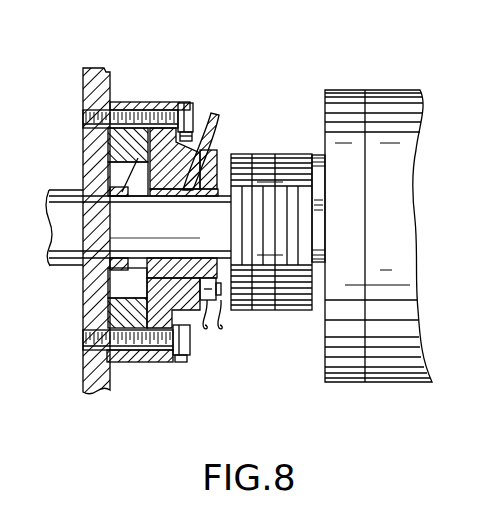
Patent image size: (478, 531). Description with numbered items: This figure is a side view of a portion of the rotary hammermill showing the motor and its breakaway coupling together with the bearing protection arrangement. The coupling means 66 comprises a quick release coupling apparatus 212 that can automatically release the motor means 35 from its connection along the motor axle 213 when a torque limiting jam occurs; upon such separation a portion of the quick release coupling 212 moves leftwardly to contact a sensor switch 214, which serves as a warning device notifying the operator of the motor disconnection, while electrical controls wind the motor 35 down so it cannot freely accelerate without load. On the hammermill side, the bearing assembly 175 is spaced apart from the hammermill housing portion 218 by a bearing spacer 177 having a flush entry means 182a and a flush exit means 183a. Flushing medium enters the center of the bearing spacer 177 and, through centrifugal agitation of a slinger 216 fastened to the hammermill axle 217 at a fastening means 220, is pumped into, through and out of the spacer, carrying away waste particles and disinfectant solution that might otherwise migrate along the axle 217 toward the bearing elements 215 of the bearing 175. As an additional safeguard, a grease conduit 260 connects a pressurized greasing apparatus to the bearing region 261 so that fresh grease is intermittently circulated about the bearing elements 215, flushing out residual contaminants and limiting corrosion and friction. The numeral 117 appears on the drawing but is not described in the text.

The motor means 35 is at (405, 90).
The coupling means 66 is at (320, 223).
The frame member 117 is at (467, 334).
The bearing assembly 175 is at (170, 102).
The bearing spacer 177 is at (122, 102).
The flush entry means 182a is at (110, 145).
The flush exit means 183a is at (150, 363).
The quick release coupling apparatus 212 is at (272, 160).
The motor axle 213 is at (317, 263).
The sensor switch 214 is at (220, 300).
The bearing elements 215 is at (183, 313).
The slinger 216 is at (113, 297).
The hammermill axle 217 is at (128, 225).
The hammermill housing portion 218 is at (83, 182).
The fastening means 220 is at (142, 104).
The grease conduit 260 is at (218, 116).
The bearing region 261 is at (188, 190).